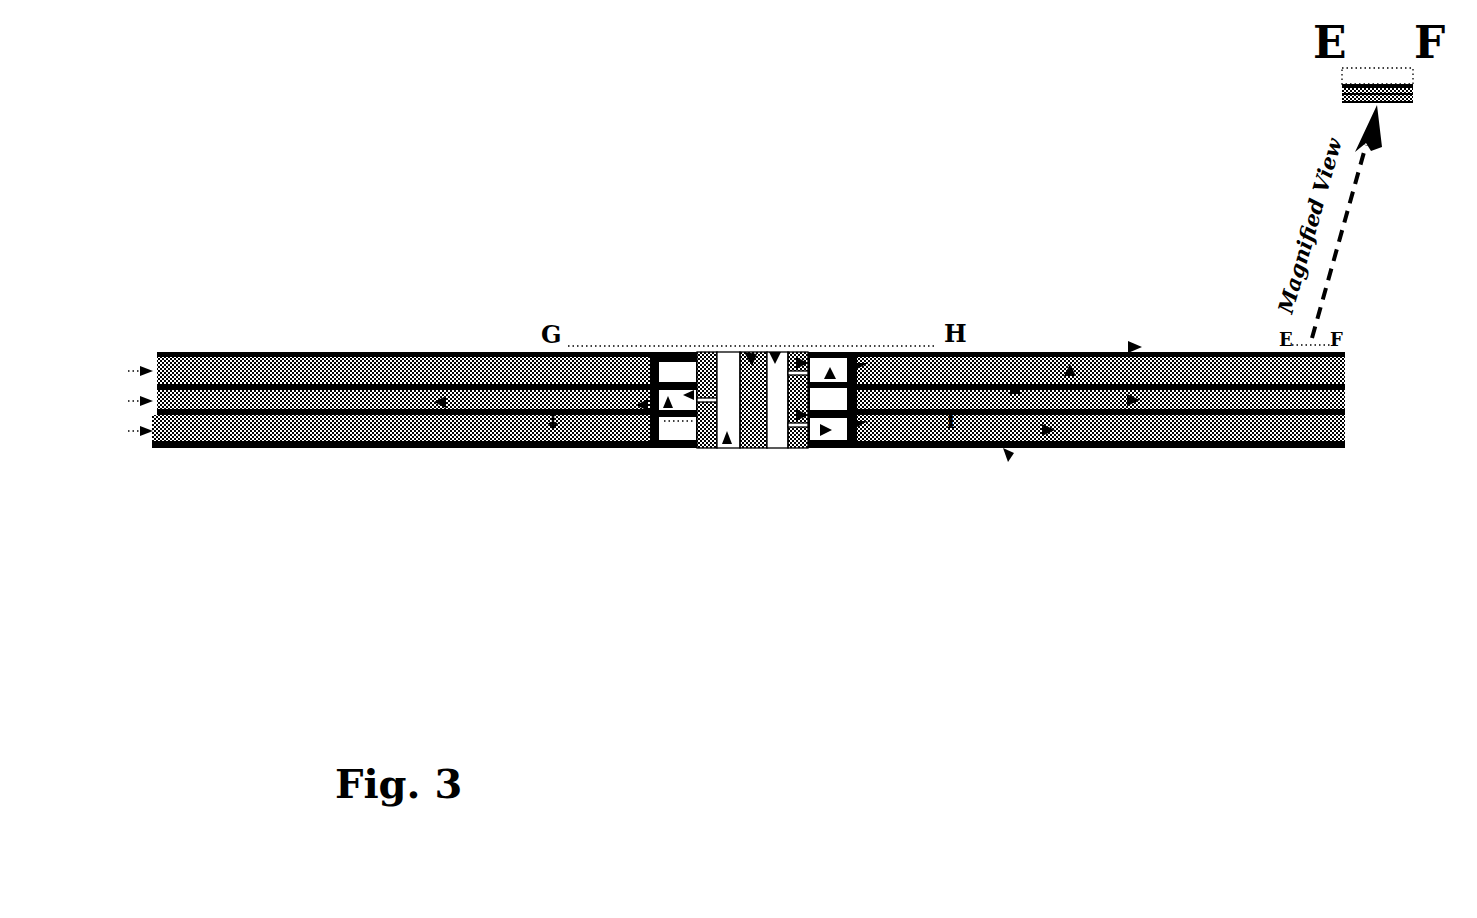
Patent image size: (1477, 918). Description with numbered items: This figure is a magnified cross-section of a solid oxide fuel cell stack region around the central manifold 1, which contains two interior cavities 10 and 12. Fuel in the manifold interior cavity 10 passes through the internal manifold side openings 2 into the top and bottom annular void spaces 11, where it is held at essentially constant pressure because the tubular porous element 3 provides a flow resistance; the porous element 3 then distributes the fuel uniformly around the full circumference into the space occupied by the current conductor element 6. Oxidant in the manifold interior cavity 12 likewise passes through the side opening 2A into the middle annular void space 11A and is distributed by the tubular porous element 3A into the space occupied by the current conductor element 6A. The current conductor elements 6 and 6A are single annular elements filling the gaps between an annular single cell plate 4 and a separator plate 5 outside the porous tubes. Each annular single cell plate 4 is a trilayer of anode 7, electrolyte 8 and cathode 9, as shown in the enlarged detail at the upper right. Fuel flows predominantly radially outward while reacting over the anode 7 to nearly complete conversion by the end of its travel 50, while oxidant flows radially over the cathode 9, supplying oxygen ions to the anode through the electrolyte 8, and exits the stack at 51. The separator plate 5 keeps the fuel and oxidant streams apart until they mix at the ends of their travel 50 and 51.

The manifold 1 is at (742, 345).
The internal manifold side opening 2 is at (810, 350).
The internal manifold side opening 2A is at (403, 330).
The tubular porous element 3 is at (887, 343).
The tubular porous element 3A is at (401, 453).
The annular single cell plate 4 is at (1142, 380).
The separator plate 5 is at (1016, 396).
The current conductor element 6 is at (1072, 378).
The current conductor element 6A is at (403, 438).
The anode 7 is at (1422, 99).
The electrolyte 8 is at (1422, 86).
The cathode 9 is at (1334, 81).
The manifold interior cavity 10 is at (777, 345).
The annular void space 11 is at (831, 442).
The annular void space 11A is at (662, 442).
The manifold interior cavity 12 is at (727, 449).
The end of fuel travel 50 is at (114, 405).
The oxidant exit 51 is at (127, 404).